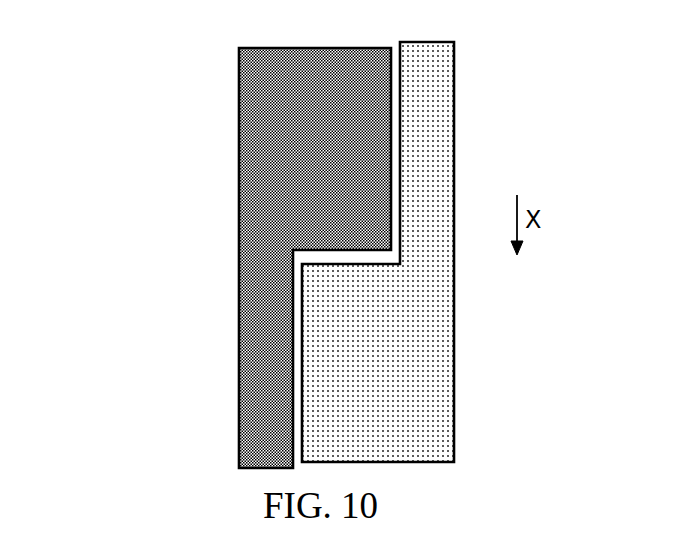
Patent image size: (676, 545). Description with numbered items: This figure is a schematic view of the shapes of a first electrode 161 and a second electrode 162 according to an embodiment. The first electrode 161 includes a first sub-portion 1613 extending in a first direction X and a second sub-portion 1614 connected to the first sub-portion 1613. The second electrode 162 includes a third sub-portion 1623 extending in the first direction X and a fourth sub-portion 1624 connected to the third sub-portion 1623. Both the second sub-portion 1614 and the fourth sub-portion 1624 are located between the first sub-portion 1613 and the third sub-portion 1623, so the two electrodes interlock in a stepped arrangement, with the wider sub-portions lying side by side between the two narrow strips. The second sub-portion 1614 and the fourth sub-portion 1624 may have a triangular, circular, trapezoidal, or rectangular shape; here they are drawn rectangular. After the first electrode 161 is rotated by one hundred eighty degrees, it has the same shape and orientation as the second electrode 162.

The first electrode 161 is at (225, 258).
The second sub-portion 1614 is at (345, 93).
The first sub-portion 1613 is at (255, 418).
The second electrode 162 is at (439, 252).
The third sub-portion 1623 is at (412, 98).
The fourth sub-portion 1624 is at (352, 392).